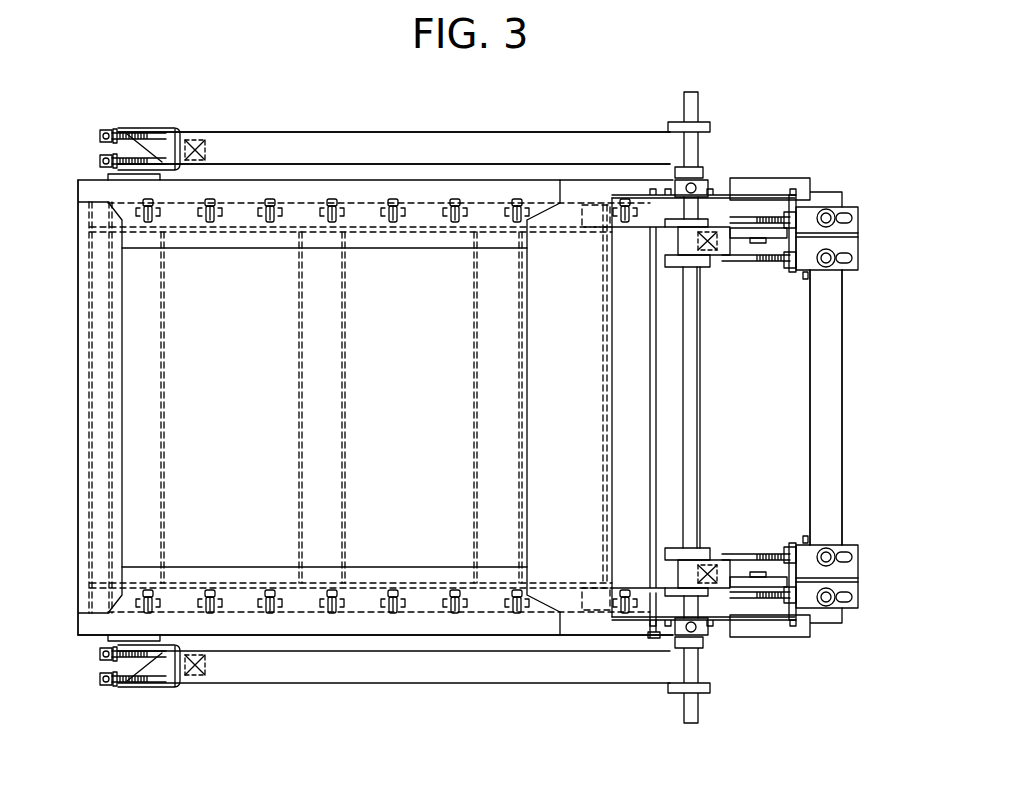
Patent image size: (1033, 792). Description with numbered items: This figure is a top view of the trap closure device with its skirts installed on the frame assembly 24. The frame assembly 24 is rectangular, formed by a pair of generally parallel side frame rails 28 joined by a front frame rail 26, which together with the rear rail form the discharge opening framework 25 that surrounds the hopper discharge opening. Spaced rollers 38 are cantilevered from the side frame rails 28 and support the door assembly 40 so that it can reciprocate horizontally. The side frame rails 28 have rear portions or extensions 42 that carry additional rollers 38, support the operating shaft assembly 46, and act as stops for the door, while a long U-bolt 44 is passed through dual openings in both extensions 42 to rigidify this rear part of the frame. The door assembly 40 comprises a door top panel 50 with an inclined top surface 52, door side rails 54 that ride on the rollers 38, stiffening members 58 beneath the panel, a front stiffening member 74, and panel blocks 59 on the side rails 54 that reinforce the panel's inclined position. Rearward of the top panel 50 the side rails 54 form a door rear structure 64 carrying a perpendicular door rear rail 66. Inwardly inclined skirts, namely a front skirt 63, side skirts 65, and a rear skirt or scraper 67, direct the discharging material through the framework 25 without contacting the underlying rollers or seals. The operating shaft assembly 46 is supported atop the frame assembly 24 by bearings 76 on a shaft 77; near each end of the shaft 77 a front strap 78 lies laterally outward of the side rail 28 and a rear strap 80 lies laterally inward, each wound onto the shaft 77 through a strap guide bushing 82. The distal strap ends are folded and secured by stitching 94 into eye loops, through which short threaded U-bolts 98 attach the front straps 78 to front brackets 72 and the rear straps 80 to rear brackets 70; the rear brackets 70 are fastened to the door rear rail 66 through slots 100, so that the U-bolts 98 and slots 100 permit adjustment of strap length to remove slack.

The frame assembly 24 is at (76, 628).
The discharge opening framework 25 is at (76, 302).
The front frame rail 26 is at (79, 482).
The side frame rails 28 is at (297, 186).
The rollers 38 is at (265, 214).
The door assembly 40 is at (845, 366).
The rear portions or extensions 42 is at (800, 186).
The long U-bolt 44 is at (650, 370).
The operating shaft assembly 46 is at (704, 378).
The door top panel 50 is at (470, 536).
The inclined top surface 52 is at (243, 379).
The door side rails 54 is at (615, 227).
The stiffening members 58 is at (487, 368).
The panel blocks 59 is at (656, 600).
The front skirt 63 is at (117, 305).
The door rear structure 64 is at (809, 436).
The side skirts 65 is at (427, 191).
The door rear rail 66 is at (835, 290).
The rear skirt or scraper 67 is at (548, 252).
The rear brackets 70 is at (822, 214).
The front brackets 72 is at (112, 148).
The front stiffening member 74 is at (155, 393).
The bearings 76 is at (703, 190).
The shaft 77 is at (693, 336).
The front straps 78 is at (230, 143).
The rear straps 80 is at (716, 233).
The strap guide bushing 82 is at (703, 116).
The stitching 94 is at (192, 138).
The short threaded U-bolt 98 is at (133, 128).
The slots 100 is at (845, 265).